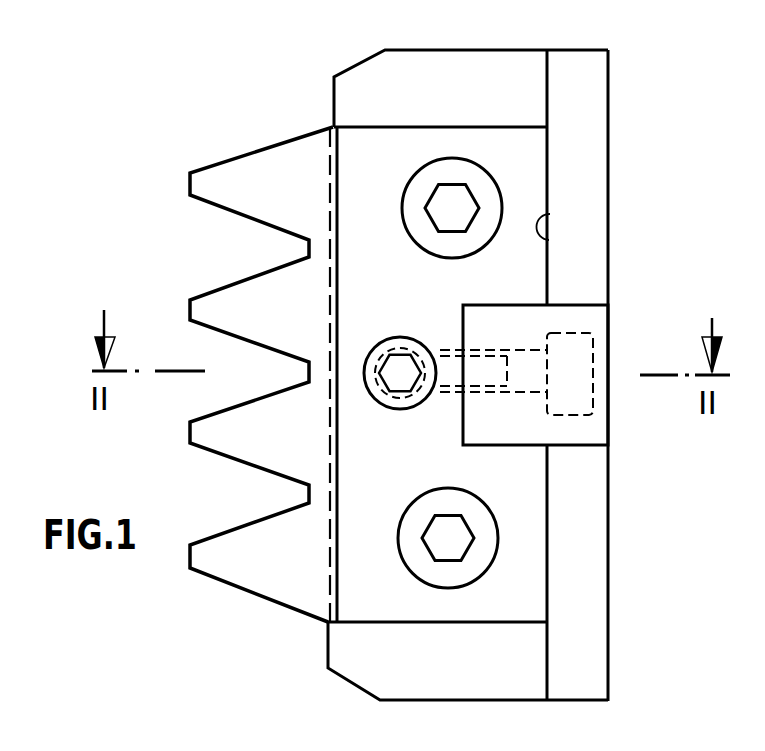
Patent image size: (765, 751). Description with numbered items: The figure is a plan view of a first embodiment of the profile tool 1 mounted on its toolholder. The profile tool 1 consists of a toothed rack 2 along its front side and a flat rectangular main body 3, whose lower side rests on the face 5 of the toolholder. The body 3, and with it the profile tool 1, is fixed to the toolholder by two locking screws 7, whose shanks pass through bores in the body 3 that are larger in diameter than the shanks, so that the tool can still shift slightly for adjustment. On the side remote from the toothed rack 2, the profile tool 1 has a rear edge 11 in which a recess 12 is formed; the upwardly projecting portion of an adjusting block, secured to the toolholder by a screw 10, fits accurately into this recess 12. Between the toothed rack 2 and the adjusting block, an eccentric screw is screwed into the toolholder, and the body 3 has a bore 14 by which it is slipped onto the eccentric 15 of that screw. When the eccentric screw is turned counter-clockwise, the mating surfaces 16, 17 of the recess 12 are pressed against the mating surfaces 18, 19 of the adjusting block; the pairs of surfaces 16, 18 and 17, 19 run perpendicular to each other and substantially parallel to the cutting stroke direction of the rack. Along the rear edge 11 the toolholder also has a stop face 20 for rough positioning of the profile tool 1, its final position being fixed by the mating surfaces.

The profile tool 1 is at (393, 127).
The toothed rack 2 is at (272, 145).
The main body 3 is at (383, 273).
The face of the toolholder 5 is at (423, 668).
The locking screws 7 is at (478, 187).
The screw 10 is at (598, 396).
The rear edge 11 is at (550, 214).
The recess 12 is at (547, 445).
The bore 14 is at (376, 352).
The eccentric 15 is at (377, 385).
The mating surface of the recess 16 is at (520, 305).
The mating surface of the recess 17 is at (463, 412).
The mating surface of the adjusting block 18 is at (573, 305).
The mating surface of the adjusting block 19 is at (573, 445).
The stop face 20 is at (550, 88).